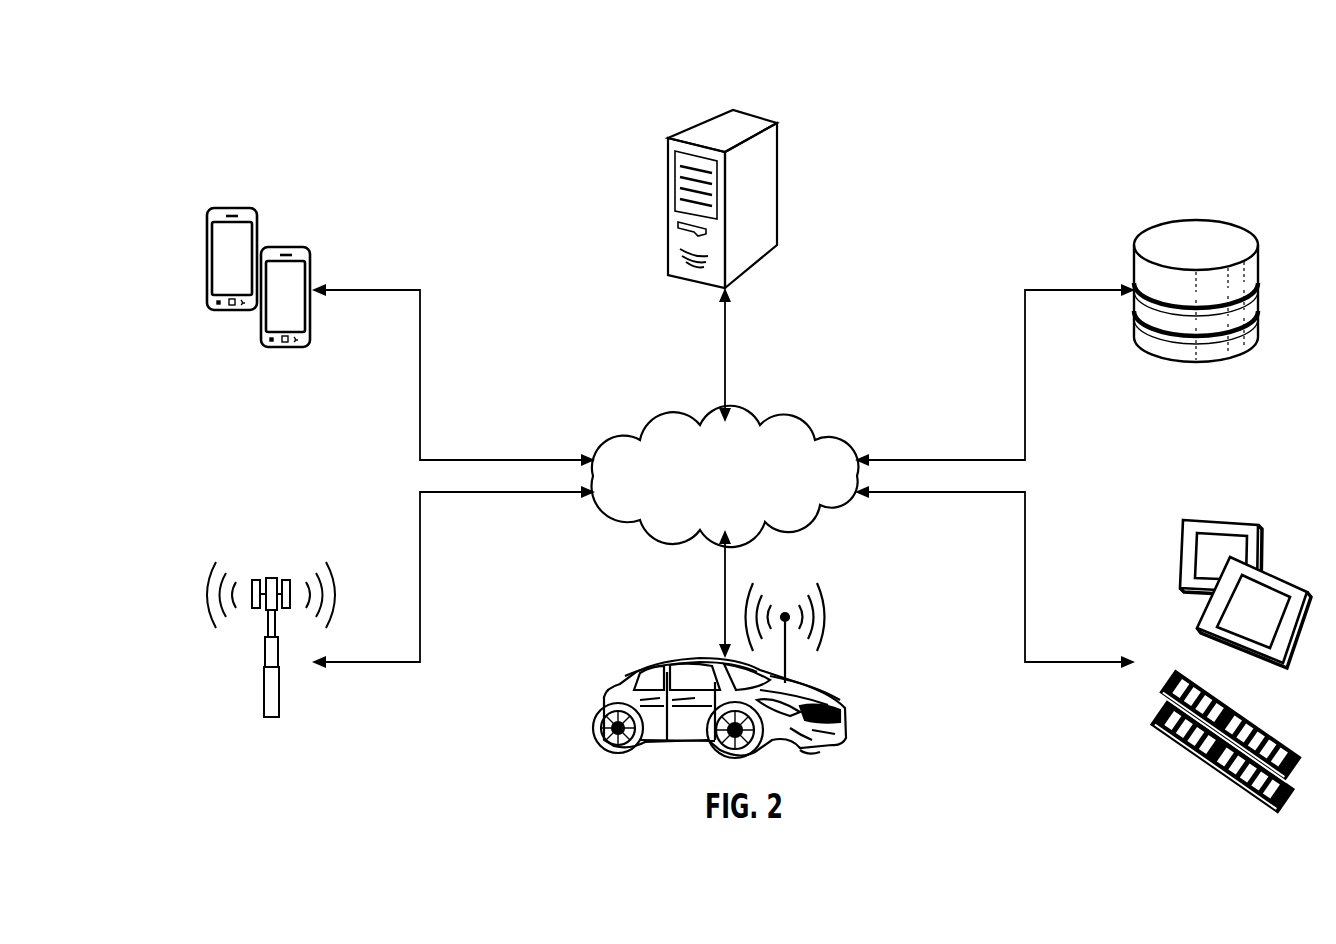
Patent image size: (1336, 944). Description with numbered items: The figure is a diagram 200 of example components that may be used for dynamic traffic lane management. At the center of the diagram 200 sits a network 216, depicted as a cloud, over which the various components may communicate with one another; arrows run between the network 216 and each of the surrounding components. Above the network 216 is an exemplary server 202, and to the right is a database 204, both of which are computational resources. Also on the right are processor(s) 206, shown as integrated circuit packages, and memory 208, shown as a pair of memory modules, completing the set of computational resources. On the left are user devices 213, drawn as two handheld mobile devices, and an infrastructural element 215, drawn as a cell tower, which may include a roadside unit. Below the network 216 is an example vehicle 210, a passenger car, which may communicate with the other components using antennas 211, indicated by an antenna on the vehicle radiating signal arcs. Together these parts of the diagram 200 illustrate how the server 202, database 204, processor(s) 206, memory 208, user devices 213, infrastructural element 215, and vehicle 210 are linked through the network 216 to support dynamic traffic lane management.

The diagram 200 is at (232, 98).
The server 202 is at (668, 230).
The database 204 is at (1135, 323).
The processor(s) 206 is at (1182, 546).
The memory 208 is at (1213, 773).
The vehicle 210 is at (690, 660).
The antennas 211 is at (807, 590).
The user devices 213 is at (230, 208).
The infrastructural element 215 is at (336, 572).
The network 216 is at (662, 430).